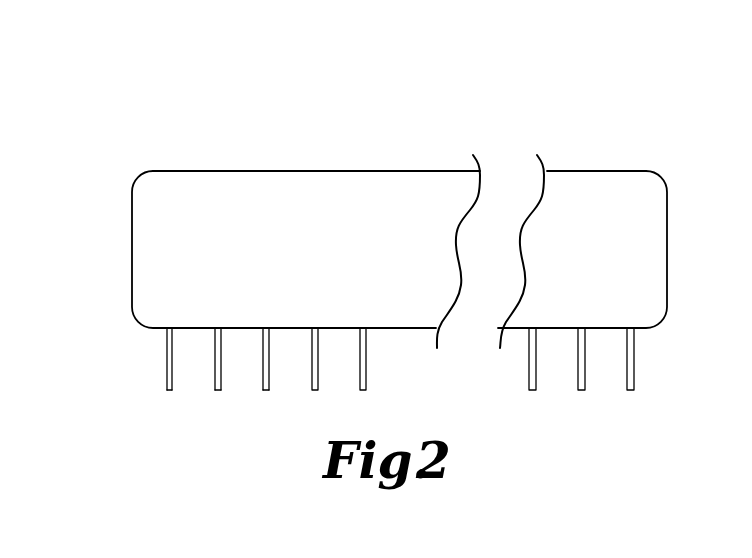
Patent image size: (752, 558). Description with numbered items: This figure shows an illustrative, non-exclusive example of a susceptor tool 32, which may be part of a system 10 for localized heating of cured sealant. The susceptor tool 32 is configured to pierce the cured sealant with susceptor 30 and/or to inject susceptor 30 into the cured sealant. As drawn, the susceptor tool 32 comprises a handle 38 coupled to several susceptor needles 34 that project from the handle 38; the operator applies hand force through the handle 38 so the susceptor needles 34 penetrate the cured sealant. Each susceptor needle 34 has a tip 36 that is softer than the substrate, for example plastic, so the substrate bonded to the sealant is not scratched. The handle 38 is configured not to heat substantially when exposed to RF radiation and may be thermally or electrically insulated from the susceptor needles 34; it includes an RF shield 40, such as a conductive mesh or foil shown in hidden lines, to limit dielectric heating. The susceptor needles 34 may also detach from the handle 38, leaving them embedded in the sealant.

The system 10 is at (120, 58).
The susceptor tool 32 is at (136, 113).
The handle 38 is at (272, 171).
The RF shield 40 is at (351, 171).
The susceptor 30 is at (167, 337).
The susceptor needle 34 is at (167, 361).
The tip 36 is at (167, 390).